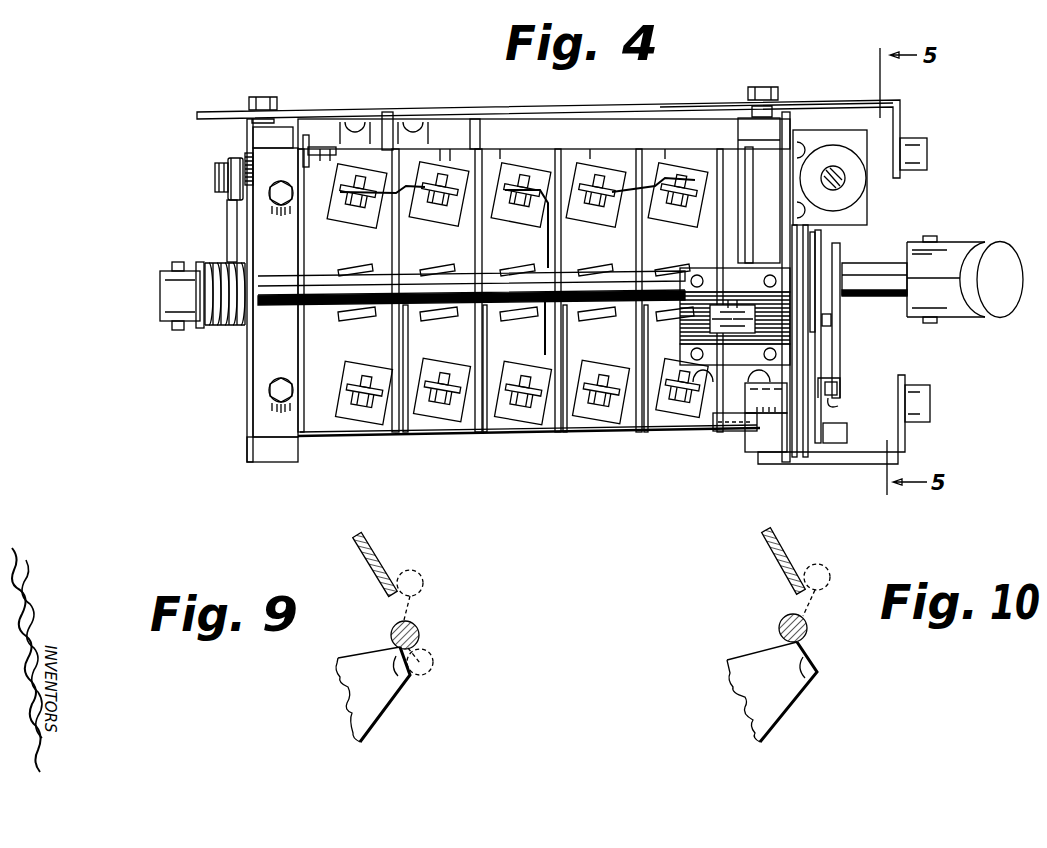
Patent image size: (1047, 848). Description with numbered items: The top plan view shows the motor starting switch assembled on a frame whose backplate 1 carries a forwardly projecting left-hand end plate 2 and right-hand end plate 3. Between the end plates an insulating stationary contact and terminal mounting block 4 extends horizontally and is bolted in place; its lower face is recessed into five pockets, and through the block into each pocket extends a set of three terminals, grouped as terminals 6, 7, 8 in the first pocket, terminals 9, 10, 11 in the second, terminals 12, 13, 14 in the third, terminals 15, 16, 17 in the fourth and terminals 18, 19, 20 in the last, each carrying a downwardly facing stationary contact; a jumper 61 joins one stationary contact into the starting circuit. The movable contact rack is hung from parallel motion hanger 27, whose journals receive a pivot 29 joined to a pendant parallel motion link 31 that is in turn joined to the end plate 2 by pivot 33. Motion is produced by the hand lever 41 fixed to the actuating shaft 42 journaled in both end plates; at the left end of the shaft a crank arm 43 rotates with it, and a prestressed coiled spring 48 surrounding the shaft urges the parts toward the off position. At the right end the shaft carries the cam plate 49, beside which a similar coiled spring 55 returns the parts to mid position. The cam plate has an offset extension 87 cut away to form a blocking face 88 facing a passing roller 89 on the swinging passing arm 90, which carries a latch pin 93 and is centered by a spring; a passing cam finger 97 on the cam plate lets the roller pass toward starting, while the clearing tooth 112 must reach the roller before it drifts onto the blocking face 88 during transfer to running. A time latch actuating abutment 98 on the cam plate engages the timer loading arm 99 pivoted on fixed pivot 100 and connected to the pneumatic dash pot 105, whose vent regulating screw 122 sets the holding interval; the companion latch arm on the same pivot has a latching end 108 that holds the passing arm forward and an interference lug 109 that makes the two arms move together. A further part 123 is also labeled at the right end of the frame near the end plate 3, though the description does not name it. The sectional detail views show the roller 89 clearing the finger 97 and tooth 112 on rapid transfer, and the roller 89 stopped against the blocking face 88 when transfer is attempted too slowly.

In FIG. 4, the backplate 1 is at (656, 107).
In FIG. 4, the left-hand end plate 2 is at (250, 410).
In FIG. 4, the right-hand end plate 3 is at (790, 123).
In FIG. 4, the stationary contact and terminal mounting block 4 is at (417, 437).
In FIG. 4, the terminal 6 is at (345, 407).
In FIG. 4, the terminal 7 is at (358, 318).
In FIG. 4, the terminal 8 is at (360, 217).
In FIG. 4, the terminal 9 is at (455, 417).
In FIG. 4, the terminal 10 is at (452, 315).
In FIG. 4, the terminal 11 is at (445, 217).
In FIG. 4, the terminal 12 is at (540, 413).
In FIG. 4, the terminal 13 is at (523, 313).
In FIG. 4, the terminal 14 is at (530, 218).
In FIG. 4, the terminal 15 is at (610, 412).
In FIG. 4, the terminal 16 is at (613, 317).
In FIG. 4, the terminal 17 is at (607, 215).
In FIG. 4, the terminal 18 is at (690, 403).
In FIG. 4, the terminal 19 is at (667, 313).
In FIG. 4, the terminal 20 is at (687, 215).
In FIG. 4, the parallel motion hanger 27 is at (228, 231).
In FIG. 4, the pivot 29 is at (228, 167).
In FIG. 4, the pendant parallel motion link 31 is at (245, 155).
In FIG. 4, the pivot 33 is at (218, 188).
In FIG. 4, the hand lever 41 is at (982, 242).
In FIG. 4, the actuating shaft 42 is at (160, 291).
In FIG. 4, the crank arm 43 is at (200, 327).
In FIG. 4, the prestressed coiled spring 48 is at (228, 325).
In FIG. 4, the cam plate 49 is at (852, 354).
In FIG. 4, the coiled prestressed spring 55 is at (840, 283).
In FIG. 4, the jumper 61 is at (550, 352).
In FIG. 4, the offset extension 87 is at (840, 378).
In FIG. 9, the blocking face 88 is at (355, 660).
In FIG. 10, the blocking face 88 is at (750, 653).
In FIG. 4, the passing roller 89 is at (838, 387).
In FIG. 9, the passing roller 89 is at (420, 630).
In FIG. 10, the passing roller 89 is at (808, 630).
In FIG. 4, the swinging passing arm 90 is at (805, 373).
In FIG. 4, the latch pin 93 is at (767, 393).
In FIG. 4, the passing cam finger 97 is at (845, 418).
In FIG. 9, the passing cam finger 97 is at (377, 553).
In FIG. 10, the passing cam finger 97 is at (785, 552).
In FIG. 4, the time latch actuating abutment 98 is at (828, 250).
In FIG. 4, the timer loading arm 99 is at (815, 225).
In FIG. 4, the fixed pivot 100 is at (831, 319).
In FIG. 4, the pneumatic dash pot 105 is at (850, 187).
In FIG. 4, the latching end 108 is at (802, 440).
In FIG. 4, the interference lug 109 is at (807, 357).
In FIG. 4, the clearing tooth 112 is at (925, 402).
In FIG. 9, the clearing tooth 112 is at (397, 680).
In FIG. 10, the clearing tooth 112 is at (808, 682).
In FIG. 4, the vent regulating screw 122 is at (829, 168).
In FIG. 4, the terminal lug 123 is at (912, 138).